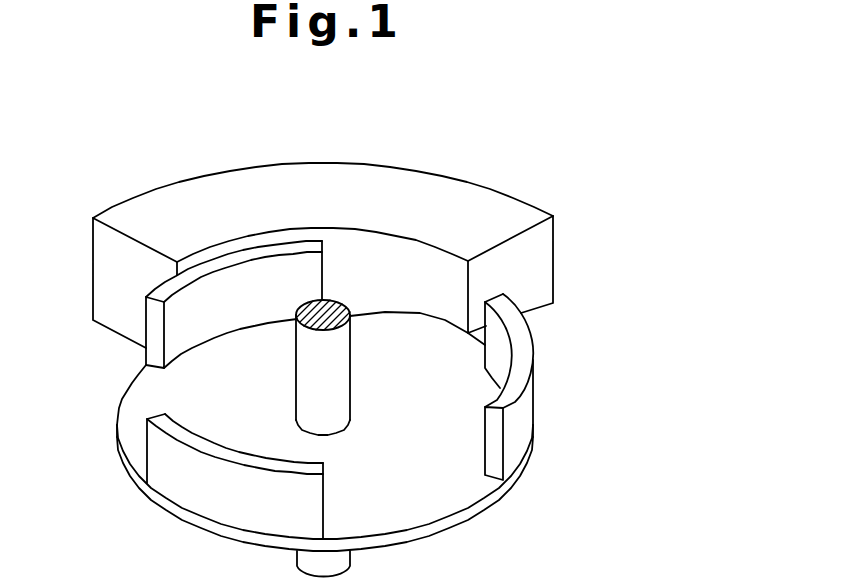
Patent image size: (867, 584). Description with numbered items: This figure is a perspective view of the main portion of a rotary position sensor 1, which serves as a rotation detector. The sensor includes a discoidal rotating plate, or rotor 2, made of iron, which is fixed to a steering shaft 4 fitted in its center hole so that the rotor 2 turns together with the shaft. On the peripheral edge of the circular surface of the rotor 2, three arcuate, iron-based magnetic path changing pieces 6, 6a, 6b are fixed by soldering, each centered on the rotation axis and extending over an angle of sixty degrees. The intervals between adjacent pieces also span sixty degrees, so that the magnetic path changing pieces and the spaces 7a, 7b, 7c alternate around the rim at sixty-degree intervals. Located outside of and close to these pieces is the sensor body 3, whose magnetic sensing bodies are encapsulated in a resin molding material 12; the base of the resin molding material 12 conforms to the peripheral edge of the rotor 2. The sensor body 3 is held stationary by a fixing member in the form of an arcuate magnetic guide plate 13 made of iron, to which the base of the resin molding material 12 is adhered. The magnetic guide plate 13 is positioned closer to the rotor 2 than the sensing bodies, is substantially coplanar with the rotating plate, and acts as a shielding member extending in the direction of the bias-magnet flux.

The rotary position sensor 1 is at (652, 224).
The rotor 2 is at (496, 496).
The sensor body 3 is at (507, 206).
The steering shaft 4 is at (330, 311).
The magnetic path changing piece 6 is at (196, 438).
The magnetic path changing piece 6a is at (167, 284).
The magnetic path changing piece 6b is at (534, 343).
The space 7a is at (412, 333).
The space 7b is at (421, 516).
The space 7c is at (133, 396).
The resin molding material 12 is at (425, 172).
The magnetic guide plate 13 is at (551, 305).